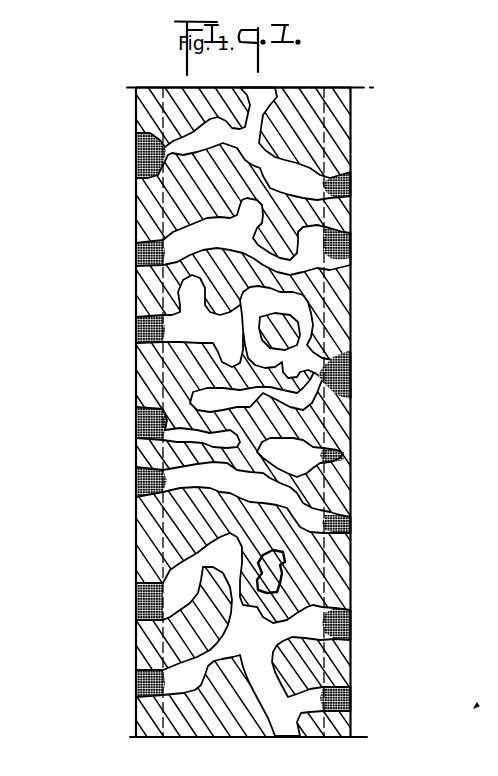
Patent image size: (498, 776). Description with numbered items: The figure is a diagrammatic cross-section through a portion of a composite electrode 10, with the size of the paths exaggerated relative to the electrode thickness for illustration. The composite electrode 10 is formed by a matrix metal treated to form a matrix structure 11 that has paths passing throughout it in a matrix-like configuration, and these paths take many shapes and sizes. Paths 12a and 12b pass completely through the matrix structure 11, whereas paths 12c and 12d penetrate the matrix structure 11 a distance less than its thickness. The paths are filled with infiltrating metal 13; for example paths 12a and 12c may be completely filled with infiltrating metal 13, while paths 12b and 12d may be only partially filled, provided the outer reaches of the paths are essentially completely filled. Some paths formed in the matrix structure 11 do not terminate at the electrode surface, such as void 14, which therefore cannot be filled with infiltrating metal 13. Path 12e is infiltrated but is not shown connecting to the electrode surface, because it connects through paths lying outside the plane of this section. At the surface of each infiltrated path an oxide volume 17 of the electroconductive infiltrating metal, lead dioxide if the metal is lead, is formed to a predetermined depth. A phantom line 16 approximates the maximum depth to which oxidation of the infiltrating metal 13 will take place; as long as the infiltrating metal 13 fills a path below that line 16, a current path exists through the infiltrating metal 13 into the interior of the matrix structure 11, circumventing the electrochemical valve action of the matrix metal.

The composite electrode 10 is at (84, 365).
The matrix structure 11 is at (283, 317).
The path 12a is at (288, 171).
The path 12b is at (305, 224).
The path 12c is at (165, 302).
The path 12d is at (285, 416).
The path 12e is at (300, 343).
The infiltrating metal 13 is at (160, 215).
The void 14 is at (290, 576).
The line 16 is at (168, 87).
The oxide volume 17 is at (137, 148).